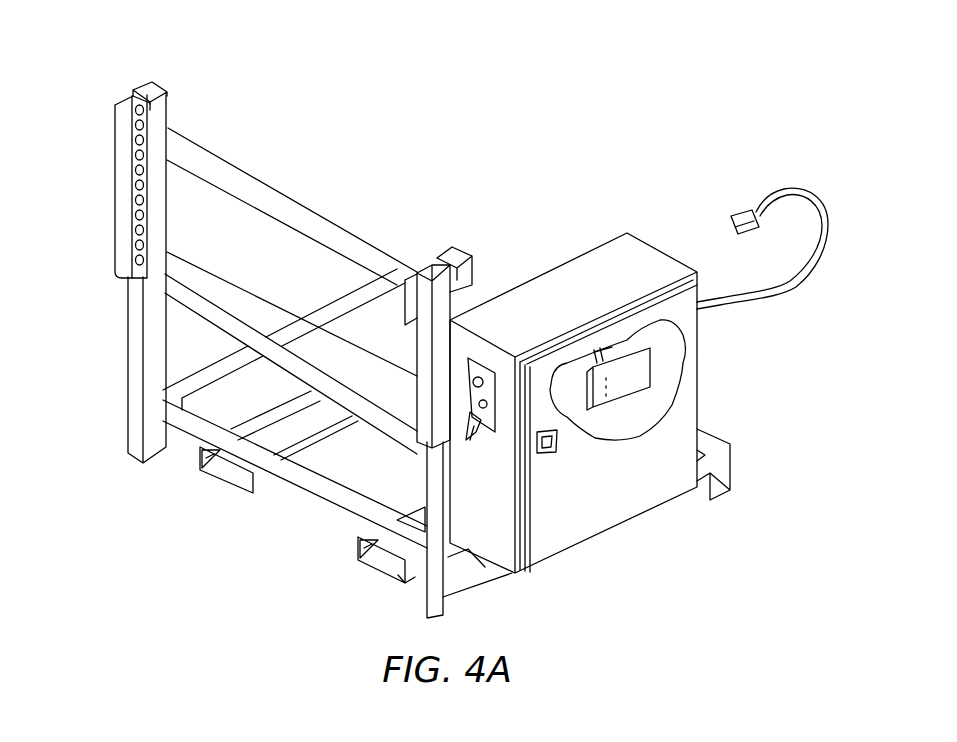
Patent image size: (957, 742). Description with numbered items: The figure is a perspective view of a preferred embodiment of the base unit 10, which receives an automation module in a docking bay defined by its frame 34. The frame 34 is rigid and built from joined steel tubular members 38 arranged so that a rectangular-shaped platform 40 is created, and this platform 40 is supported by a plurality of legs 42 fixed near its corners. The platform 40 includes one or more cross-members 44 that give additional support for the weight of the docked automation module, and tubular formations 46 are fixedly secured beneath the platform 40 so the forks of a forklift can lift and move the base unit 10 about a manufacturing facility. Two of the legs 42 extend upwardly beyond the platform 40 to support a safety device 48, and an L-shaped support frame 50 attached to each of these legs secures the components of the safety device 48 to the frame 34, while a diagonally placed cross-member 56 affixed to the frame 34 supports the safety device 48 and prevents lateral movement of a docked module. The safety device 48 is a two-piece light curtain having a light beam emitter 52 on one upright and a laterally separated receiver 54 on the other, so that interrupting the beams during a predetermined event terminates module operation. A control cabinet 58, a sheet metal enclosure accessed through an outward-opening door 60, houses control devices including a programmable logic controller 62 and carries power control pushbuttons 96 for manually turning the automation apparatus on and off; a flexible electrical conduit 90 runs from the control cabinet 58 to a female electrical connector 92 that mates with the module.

The base unit 10 is at (540, 162).
The frame 34 is at (403, 444).
The tubular members 38 is at (200, 364).
The platform 40 is at (232, 424).
The legs 42 is at (135, 453).
The cross-members 44 is at (402, 440).
The formations 46 is at (215, 480).
The safety device 48 is at (130, 80).
The support frame 50 is at (125, 218).
The light beam emitter 52 is at (150, 130).
The receiver 54 is at (432, 265).
The diagonally placed cross-members 56 is at (291, 211).
The control cabinet 58 is at (570, 376).
The door 60 is at (602, 516).
The programmable logic controller 62 is at (612, 393).
The electrical conduit 90 is at (817, 237).
The female electrical connector 92 is at (736, 213).
The power control pushbuttons 96 is at (478, 422).